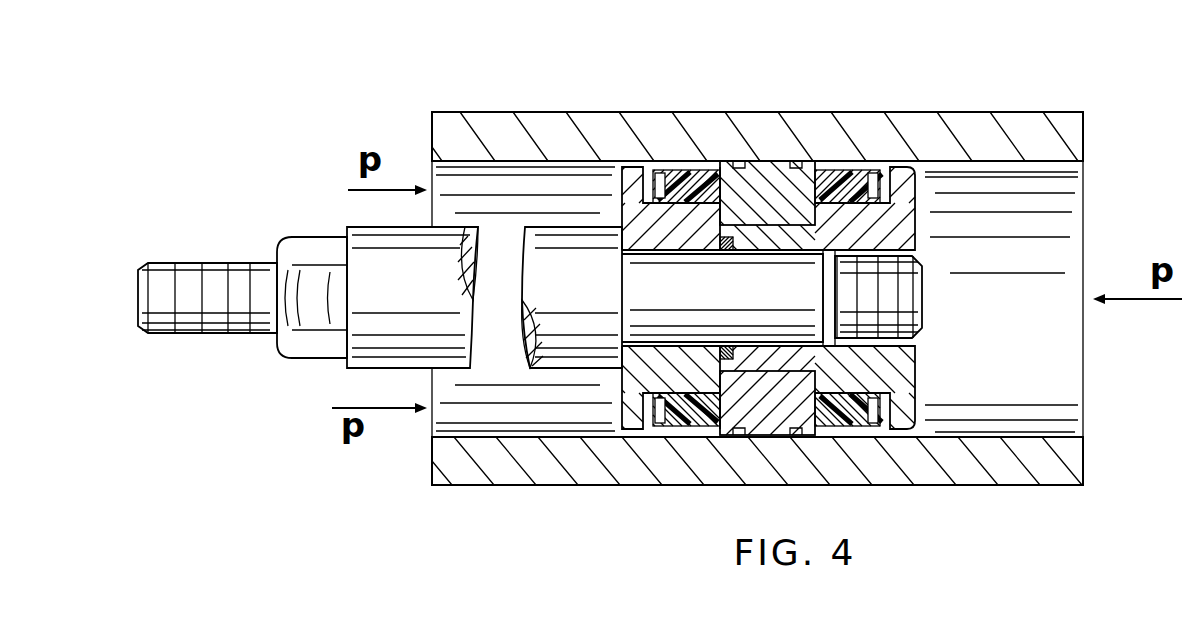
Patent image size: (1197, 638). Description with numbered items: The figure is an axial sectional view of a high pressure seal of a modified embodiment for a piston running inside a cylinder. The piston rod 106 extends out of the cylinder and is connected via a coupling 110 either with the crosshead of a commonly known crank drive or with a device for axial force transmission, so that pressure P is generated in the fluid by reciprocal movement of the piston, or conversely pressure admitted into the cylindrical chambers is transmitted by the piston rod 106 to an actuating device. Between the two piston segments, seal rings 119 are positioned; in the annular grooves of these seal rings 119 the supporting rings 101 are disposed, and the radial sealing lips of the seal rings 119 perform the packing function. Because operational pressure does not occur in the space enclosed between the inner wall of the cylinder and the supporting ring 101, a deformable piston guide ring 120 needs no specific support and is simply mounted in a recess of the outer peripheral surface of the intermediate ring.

The supporting ring 101 is at (708, 167).
The seal ring 119 is at (680, 167).
The piston guide ring 120 is at (768, 167).
The piston rod 106 is at (673, 302).
The coupling 110 is at (302, 248).